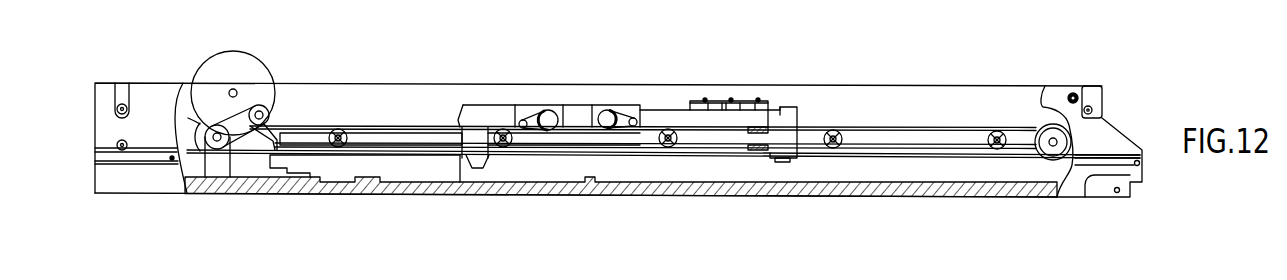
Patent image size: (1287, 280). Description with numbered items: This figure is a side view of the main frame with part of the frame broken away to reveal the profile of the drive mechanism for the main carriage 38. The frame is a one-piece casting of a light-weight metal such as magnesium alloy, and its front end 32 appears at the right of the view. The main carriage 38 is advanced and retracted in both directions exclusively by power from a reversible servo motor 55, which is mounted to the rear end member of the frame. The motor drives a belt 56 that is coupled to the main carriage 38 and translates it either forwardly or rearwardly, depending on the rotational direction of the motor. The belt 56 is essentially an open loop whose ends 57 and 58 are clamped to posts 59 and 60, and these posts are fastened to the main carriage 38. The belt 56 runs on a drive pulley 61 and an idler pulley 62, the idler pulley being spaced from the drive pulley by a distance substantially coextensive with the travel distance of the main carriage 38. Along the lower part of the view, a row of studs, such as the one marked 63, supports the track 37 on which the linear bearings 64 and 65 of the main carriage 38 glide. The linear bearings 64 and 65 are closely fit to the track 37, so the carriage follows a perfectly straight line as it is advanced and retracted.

The front end 32 is at (1012, 203).
The track 37 is at (945, 148).
The main carriage 38 is at (680, 96).
The reversible servo motor 55 is at (252, 70).
The belt 56 is at (925, 126).
The belt end 57 is at (543, 110).
The belt end 58 is at (636, 118).
The post 59 is at (550, 110).
The post 60 is at (609, 110).
The drive pulley 61 is at (203, 128).
The idler pulley 62 is at (1045, 86).
The stud 63 is at (836, 130).
The linear bearing 64 is at (760, 151).
The linear bearing 65 is at (478, 142).